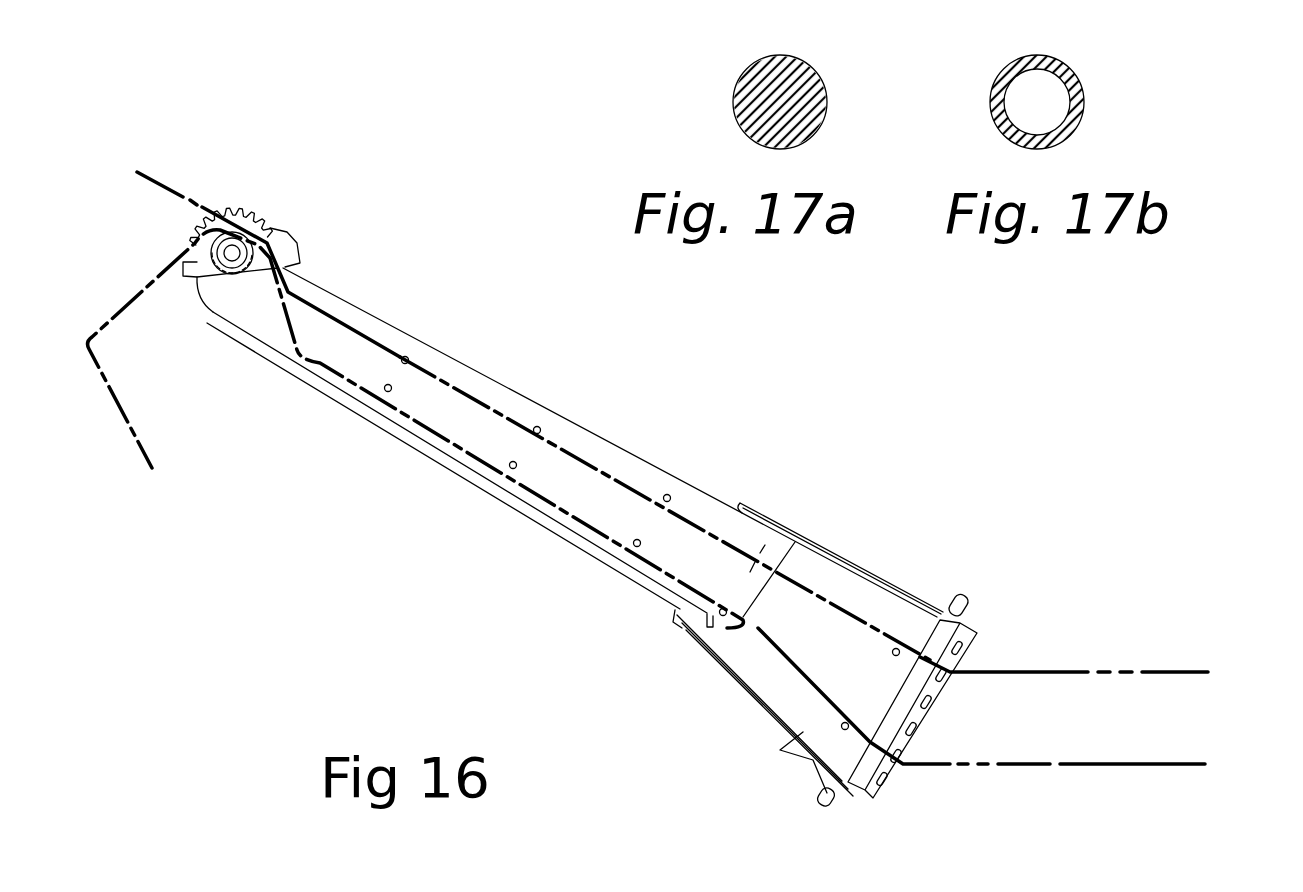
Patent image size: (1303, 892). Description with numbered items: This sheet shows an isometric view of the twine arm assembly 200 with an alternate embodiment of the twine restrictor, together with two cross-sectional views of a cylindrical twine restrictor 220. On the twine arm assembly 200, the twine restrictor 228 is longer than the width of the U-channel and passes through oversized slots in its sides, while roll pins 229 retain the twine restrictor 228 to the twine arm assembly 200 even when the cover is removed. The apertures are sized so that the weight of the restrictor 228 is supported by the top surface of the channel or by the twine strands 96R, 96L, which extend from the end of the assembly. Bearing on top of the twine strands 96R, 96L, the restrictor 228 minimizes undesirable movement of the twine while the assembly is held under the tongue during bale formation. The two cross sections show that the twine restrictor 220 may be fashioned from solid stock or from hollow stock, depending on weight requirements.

In FIG. 16, the twine arm assembly 200 is at (430, 543).
In FIG. 17A, the twine restrictor 220 is at (813, 67).
In FIG. 17B, the twine restrictor 220 is at (995, 70).
In FIG. 16, the twine restrictor 228 is at (960, 600).
In FIG. 16, the roll pins 229 is at (948, 600).
In FIG. 16, the twine strand 96R is at (1085, 673).
In FIG. 16, the twine strand 96L is at (1000, 782).